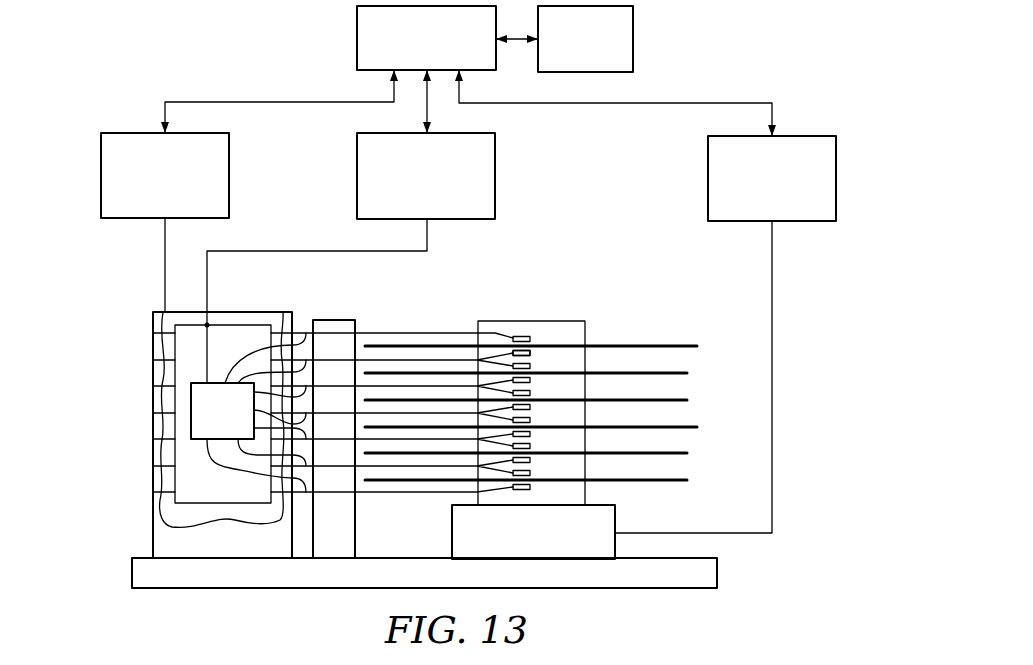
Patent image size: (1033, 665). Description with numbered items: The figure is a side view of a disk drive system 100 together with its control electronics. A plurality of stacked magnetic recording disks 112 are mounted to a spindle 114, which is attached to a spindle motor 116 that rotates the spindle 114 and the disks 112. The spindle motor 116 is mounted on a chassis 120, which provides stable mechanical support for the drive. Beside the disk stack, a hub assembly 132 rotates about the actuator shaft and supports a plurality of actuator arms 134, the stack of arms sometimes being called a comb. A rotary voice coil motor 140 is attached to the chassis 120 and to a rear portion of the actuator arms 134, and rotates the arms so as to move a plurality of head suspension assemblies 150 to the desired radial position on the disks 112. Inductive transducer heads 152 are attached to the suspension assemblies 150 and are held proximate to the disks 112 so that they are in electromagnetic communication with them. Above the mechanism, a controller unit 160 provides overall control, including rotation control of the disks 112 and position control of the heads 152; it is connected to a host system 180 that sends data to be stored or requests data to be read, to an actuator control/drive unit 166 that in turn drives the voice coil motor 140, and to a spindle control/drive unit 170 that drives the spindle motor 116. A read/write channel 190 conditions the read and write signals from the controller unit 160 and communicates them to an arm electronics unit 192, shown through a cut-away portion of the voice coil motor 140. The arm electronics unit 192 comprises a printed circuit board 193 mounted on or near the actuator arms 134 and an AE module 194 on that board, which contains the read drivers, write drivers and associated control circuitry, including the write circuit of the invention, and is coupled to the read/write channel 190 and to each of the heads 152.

The disk drive system 100 is at (137, 341).
The magnetic recording disks 112 is at (687, 373).
The spindle 114 is at (586, 331).
The spindle motor 116 is at (533, 532).
The chassis 120 is at (718, 578).
The hub assembly 132 is at (327, 320).
The actuator arms 134 is at (425, 360).
The rotary voice coil motor 140 is at (153, 525).
The head suspension assemblies 150 is at (518, 336).
The inductive transducer heads 152 is at (530, 352).
The controller unit 160 is at (357, 38).
The actuator control/drive unit 166 is at (101, 174).
The spindle control/drive 170 is at (836, 182).
The host system 180 is at (633, 40).
The read/write channel 190 is at (495, 178).
The arm electronics unit 192 is at (188, 367).
The printed circuit board 193 is at (190, 477).
The AE module 194 is at (248, 412).